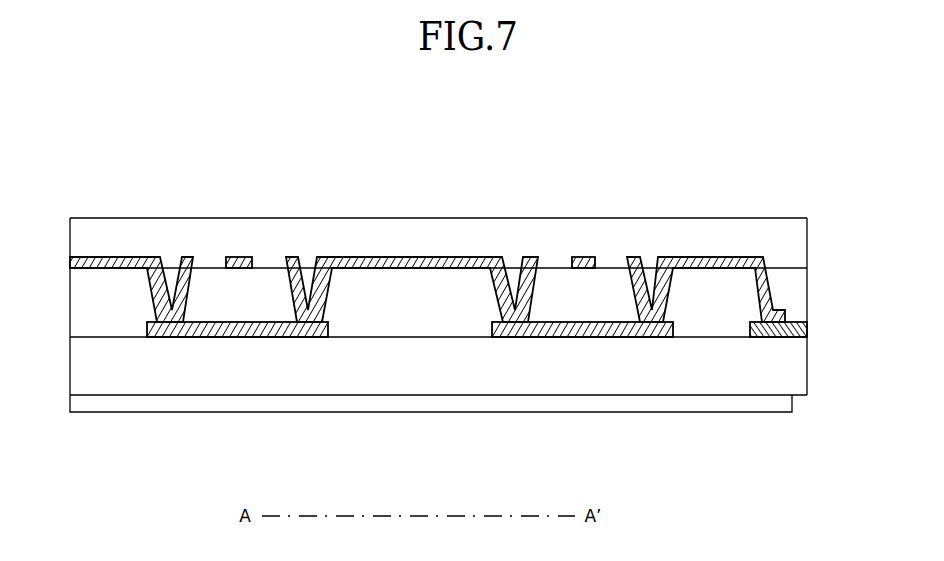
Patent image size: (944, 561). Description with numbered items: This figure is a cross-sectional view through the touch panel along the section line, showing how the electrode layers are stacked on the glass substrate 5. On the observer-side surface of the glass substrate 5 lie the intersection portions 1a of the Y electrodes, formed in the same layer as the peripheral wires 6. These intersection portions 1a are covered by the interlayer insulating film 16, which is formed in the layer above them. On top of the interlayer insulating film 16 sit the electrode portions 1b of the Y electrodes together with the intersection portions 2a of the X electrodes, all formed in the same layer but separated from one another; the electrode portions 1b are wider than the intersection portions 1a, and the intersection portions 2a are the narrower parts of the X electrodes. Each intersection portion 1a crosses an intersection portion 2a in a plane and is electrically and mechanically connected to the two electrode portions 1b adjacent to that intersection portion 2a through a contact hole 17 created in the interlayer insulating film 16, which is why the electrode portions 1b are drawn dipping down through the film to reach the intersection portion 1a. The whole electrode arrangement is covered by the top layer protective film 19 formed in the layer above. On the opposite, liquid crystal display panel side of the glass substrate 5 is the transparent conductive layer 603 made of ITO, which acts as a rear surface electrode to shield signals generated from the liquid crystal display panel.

The intersection portion 1a is at (240, 328).
The electrode portion 1b is at (427, 298).
The intersection portion 2a is at (236, 257).
The glass substrate 5 is at (737, 368).
The peripheral wire 6 is at (803, 331).
The interlayer insulating film 16 is at (788, 292).
The contact hole 17 is at (148, 290).
The top layer protective film 19 is at (169, 240).
The transparent conductive layer 603 is at (673, 402).